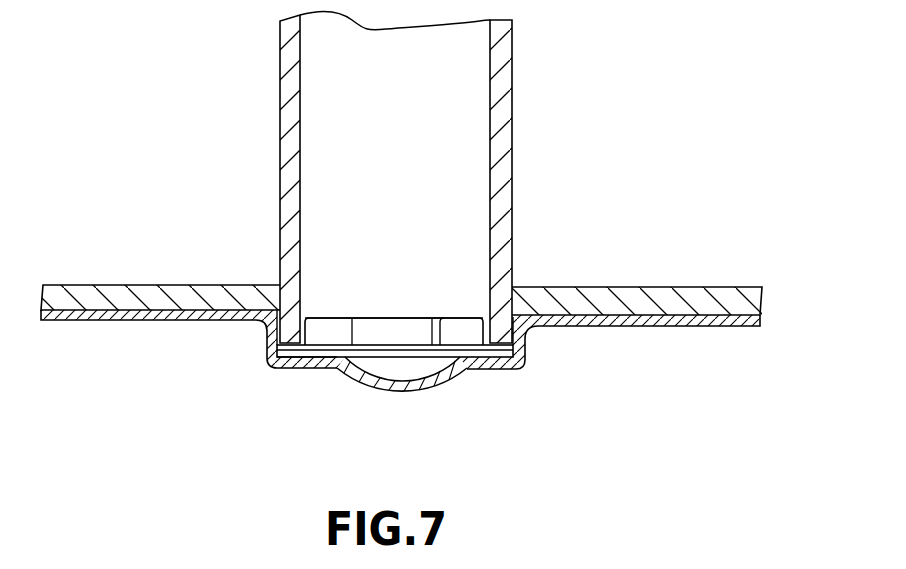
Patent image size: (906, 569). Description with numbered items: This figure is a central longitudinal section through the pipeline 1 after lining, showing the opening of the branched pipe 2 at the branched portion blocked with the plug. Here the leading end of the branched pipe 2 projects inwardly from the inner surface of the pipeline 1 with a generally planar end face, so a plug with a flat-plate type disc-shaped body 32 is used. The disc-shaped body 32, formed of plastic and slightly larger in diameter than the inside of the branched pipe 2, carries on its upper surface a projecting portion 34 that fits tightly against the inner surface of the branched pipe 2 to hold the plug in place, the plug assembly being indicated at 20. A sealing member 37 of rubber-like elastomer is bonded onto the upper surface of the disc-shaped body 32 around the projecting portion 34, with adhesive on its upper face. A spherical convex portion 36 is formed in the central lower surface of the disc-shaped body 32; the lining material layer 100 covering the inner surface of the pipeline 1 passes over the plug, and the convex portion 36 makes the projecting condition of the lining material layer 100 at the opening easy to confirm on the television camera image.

The pipeline 1 is at (580, 298).
The branched pipe 2 is at (506, 88).
The switch assembly 20 is at (365, 300).
The disc-shaped body 32 is at (483, 357).
The projecting portion 34 is at (403, 331).
The spherical convex portion 36 is at (398, 371).
The sealing member 37 is at (320, 353).
The lining material layer 100 is at (623, 327).